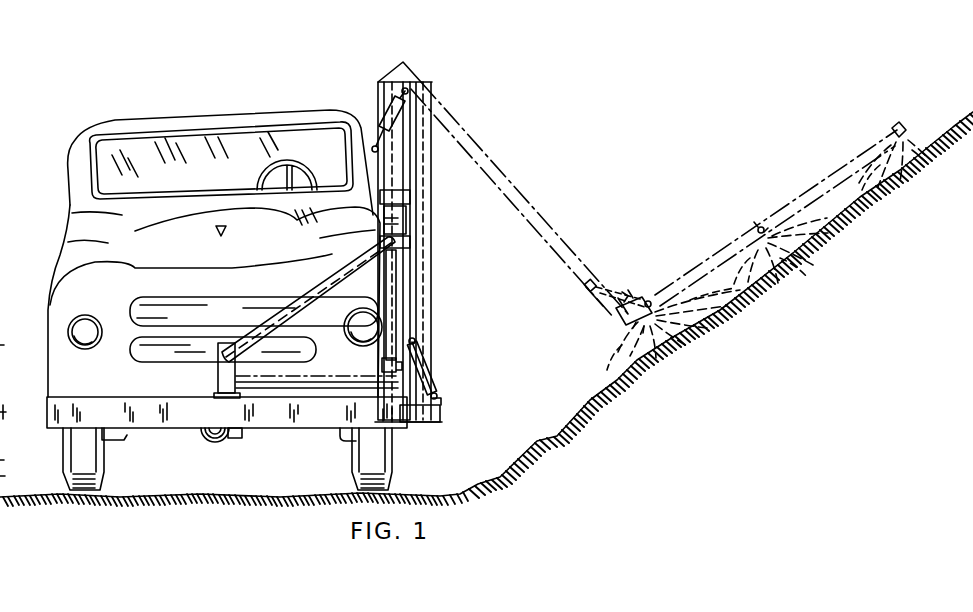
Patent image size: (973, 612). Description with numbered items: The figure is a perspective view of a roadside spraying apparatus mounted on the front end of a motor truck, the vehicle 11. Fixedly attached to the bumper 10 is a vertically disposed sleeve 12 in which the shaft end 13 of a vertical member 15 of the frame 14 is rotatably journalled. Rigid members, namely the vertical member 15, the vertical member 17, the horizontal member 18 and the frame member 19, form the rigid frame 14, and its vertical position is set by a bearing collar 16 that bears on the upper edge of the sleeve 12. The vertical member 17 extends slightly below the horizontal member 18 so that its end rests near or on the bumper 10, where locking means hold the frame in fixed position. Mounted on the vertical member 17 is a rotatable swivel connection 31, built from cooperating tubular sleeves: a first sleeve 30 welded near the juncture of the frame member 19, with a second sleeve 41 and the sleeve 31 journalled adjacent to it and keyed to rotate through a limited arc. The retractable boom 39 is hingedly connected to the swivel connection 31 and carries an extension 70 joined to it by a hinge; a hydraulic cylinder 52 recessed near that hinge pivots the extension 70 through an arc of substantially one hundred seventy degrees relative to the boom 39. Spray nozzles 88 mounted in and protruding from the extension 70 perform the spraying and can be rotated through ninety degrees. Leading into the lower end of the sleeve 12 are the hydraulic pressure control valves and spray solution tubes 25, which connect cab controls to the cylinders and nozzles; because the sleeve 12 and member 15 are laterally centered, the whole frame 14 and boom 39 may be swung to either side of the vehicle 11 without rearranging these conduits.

The bumper 10 is at (170, 420).
The vehicle 11 is at (240, 114).
The sleeve 12 is at (217, 410).
The shaft end 13 is at (234, 434).
The frame 14 is at (310, 314).
The vertical member 15 is at (218, 373).
The bearing collar 16 is at (218, 396).
The vertical member 17 is at (393, 300).
The horizontal member 18 is at (324, 390).
The frame member 19 is at (263, 311).
The hydraulic pressure control valves and spray solution tubes 25 is at (209, 439).
The first sleeve 30 is at (408, 240).
The swivel connection 31 is at (377, 120).
The boom 39 is at (583, 281).
The second sleeve 41 is at (405, 205).
The hydraulic cylinder 52 is at (616, 290).
The extension 70 is at (755, 230).
The spray nozzles 88 is at (645, 324).